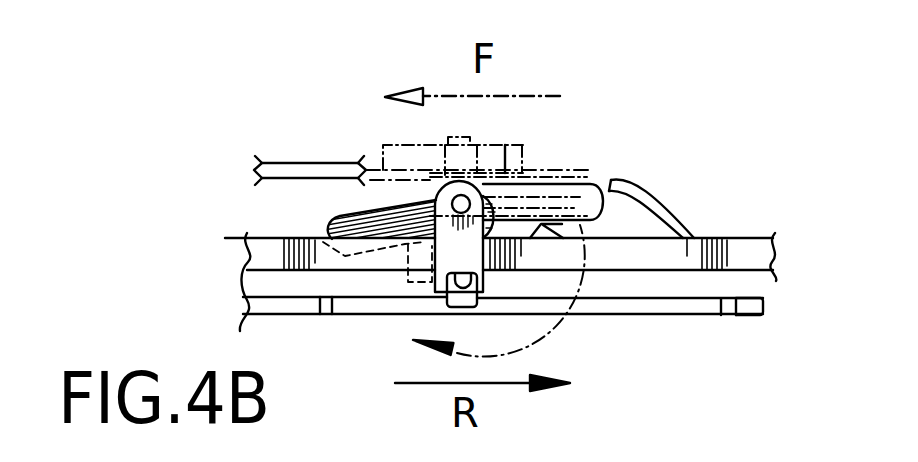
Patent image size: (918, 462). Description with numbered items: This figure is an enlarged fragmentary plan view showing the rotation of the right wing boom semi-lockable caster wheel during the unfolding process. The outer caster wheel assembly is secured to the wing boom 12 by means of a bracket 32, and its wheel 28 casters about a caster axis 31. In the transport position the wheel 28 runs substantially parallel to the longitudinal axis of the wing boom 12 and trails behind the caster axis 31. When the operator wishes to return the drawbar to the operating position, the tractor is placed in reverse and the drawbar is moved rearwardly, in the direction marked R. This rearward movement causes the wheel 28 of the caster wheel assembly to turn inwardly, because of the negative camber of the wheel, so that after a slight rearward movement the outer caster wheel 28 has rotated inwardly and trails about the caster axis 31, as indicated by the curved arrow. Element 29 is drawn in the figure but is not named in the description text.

The wing boom 12 is at (692, 240).
The wheel 28 is at (345, 216).
The spring clip 29 is at (410, 281).
The caster axis 31 is at (460, 203).
The bracket 32 is at (468, 250).